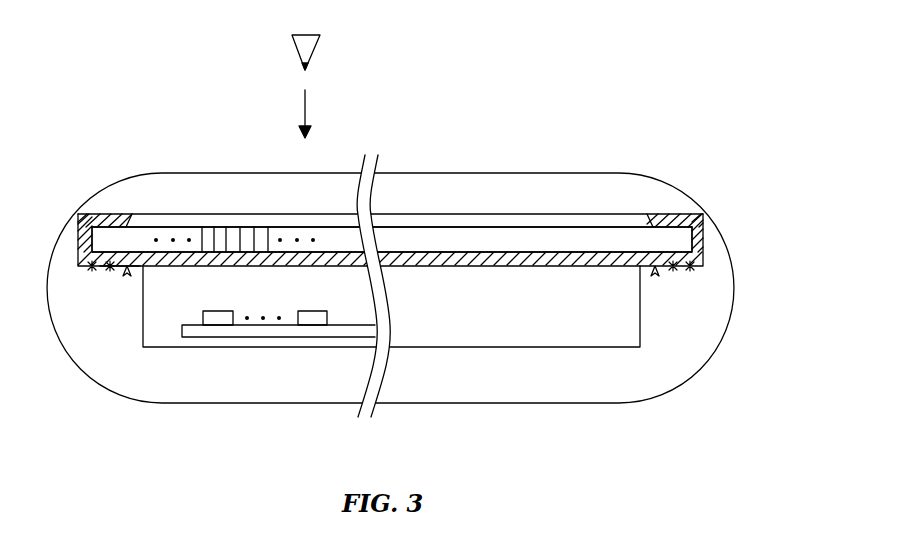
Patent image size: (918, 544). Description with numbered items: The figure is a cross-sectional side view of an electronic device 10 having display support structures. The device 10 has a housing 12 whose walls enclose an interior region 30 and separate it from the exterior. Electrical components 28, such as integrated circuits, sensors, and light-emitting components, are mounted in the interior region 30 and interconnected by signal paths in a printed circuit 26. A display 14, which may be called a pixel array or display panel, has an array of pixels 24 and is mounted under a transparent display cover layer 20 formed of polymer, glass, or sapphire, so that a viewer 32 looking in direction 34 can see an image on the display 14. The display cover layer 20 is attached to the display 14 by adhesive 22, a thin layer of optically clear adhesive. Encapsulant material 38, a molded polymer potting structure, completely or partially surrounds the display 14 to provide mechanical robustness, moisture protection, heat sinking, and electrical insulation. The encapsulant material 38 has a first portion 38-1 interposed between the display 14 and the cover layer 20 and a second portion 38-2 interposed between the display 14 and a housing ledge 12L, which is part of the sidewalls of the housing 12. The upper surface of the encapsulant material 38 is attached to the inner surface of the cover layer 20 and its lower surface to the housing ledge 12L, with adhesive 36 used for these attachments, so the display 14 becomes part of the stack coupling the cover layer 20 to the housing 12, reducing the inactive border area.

The electronic device 10 is at (725, 98).
The housing 12 is at (175, 387).
The housing ledge 12L is at (127, 277).
The display 14 is at (679, 224).
The display cover layer 20 is at (173, 193).
The adhesive 22 is at (452, 220).
The pixels 24 is at (219, 247).
The printed circuit 26 is at (275, 338).
The electrical components 28 is at (315, 310).
The interior region 30 is at (595, 328).
The viewer 32 is at (318, 50).
The direction 34 is at (307, 107).
The adhesive 36 is at (110, 270).
The encapsulant material 38 is at (473, 267).
The first portion 38-1 is at (113, 222).
The second portion 38-2 is at (118, 268).